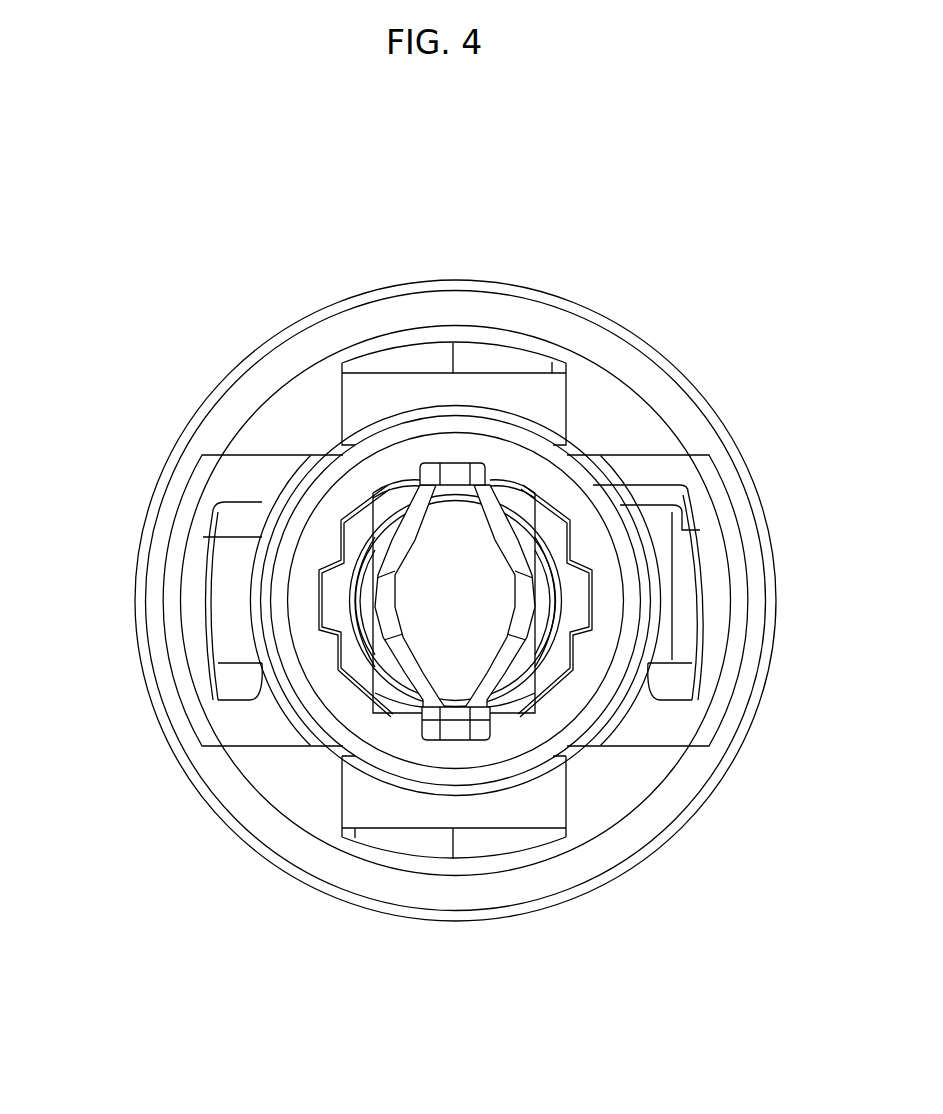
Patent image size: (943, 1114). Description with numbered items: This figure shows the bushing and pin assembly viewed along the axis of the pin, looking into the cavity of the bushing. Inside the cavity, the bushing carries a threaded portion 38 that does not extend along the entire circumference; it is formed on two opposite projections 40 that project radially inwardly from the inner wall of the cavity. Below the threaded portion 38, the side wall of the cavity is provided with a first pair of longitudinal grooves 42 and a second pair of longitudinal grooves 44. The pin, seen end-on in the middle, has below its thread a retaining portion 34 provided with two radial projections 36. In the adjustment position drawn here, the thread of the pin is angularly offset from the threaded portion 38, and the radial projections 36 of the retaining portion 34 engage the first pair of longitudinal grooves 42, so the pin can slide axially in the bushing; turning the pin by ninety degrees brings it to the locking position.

The retaining portion 34 is at (388, 655).
The radial projections 36 is at (453, 462).
The threaded portion 38 is at (335, 637).
The projections 40 is at (355, 528).
The first pair of longitudinal grooves 42 is at (492, 470).
The second pair of longitudinal grooves 44 is at (588, 600).